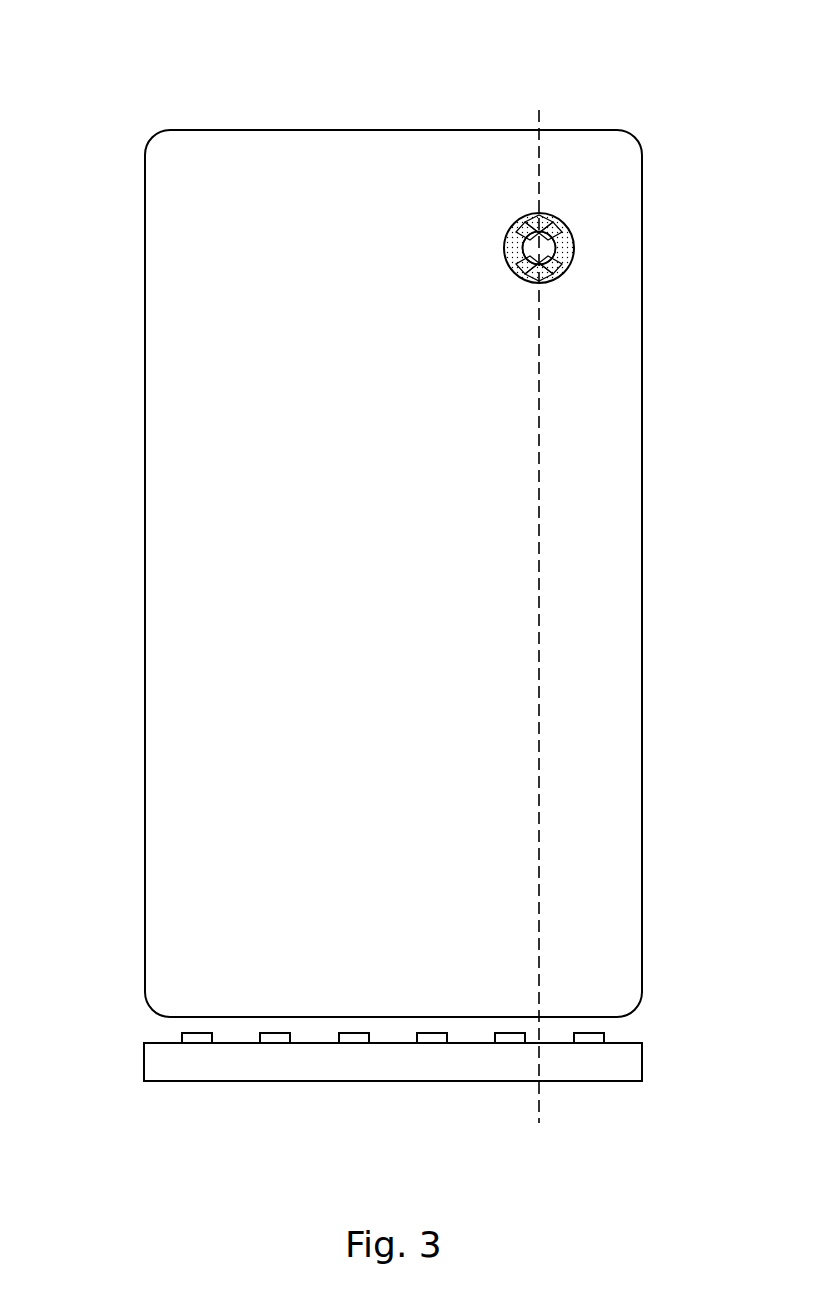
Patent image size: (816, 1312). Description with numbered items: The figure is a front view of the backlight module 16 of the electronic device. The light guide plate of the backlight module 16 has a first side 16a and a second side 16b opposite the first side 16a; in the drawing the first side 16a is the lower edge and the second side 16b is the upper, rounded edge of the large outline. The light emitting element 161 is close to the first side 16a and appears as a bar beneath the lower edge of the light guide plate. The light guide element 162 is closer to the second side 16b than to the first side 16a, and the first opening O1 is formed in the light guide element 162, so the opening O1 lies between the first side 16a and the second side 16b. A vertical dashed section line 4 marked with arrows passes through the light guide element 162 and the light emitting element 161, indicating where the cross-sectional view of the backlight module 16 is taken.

The backlight module 16 is at (88, 46).
The first side 16a is at (398, 1021).
The second side 16b is at (383, 129).
The light emitting element 161 is at (624, 1067).
The light guide element 162 is at (574, 249).
The first opening O1 is at (534, 210).
The line 4- 4 is at (541, 110).